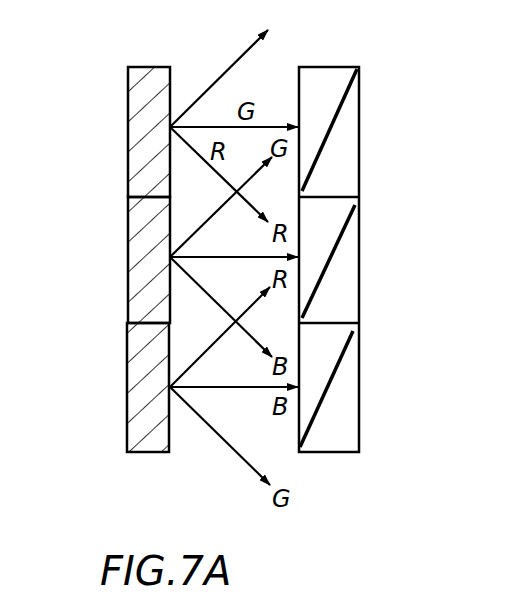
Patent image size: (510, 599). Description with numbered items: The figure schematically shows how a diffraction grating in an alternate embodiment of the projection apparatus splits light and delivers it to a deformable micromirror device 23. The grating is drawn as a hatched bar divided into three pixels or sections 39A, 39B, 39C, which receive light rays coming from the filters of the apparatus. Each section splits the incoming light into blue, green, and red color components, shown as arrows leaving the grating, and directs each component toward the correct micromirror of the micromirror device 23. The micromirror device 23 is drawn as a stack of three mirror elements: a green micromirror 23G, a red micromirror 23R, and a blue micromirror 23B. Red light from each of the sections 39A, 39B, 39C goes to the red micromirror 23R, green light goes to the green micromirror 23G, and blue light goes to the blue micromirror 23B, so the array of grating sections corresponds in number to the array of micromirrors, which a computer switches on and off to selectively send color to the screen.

The section 39A is at (128, 113).
The section 39B is at (128, 255).
The section 39C is at (127, 388).
The deformable micromirror device 23 is at (335, 452).
The green micromirror 23G is at (312, 174).
The red micromirror 23R is at (312, 305).
The blue micromirror 23B is at (308, 435).